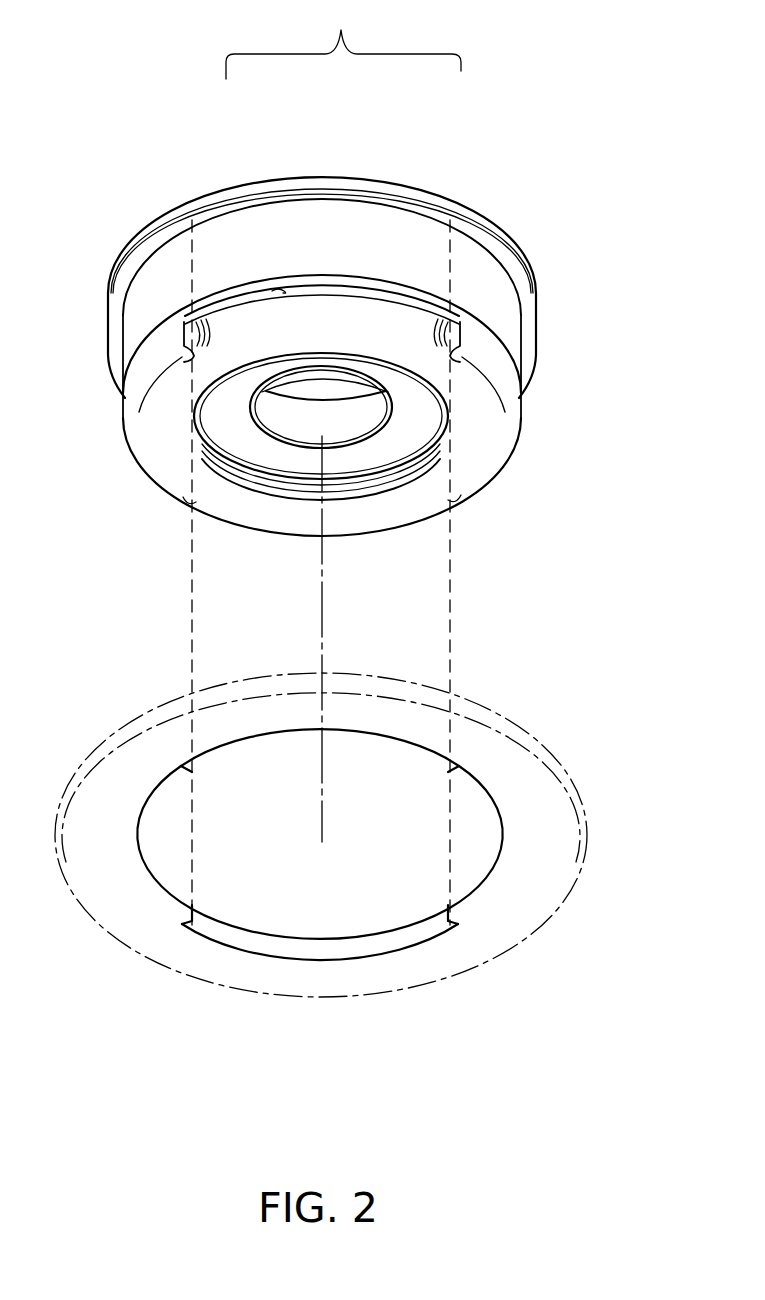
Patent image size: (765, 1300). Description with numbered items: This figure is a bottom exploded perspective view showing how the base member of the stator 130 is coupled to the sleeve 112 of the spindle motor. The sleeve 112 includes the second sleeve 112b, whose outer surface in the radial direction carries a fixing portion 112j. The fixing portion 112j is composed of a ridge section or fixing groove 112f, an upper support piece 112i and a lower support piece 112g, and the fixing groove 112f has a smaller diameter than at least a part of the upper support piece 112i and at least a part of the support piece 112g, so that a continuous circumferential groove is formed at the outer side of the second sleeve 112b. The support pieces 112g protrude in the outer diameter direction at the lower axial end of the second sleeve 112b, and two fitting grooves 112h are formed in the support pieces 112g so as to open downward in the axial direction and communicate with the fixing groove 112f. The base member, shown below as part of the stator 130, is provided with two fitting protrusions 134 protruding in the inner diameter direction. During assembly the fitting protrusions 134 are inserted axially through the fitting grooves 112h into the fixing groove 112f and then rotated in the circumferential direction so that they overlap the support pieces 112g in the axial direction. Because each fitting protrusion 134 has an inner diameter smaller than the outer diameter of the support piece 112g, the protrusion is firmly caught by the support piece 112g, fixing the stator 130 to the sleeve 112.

The sleeve 112 is at (359, 283).
The second sleeve 112b is at (477, 268).
The fixing groove 112f is at (280, 290).
The support piece 112g is at (338, 318).
The fitting groove 112h is at (165, 364).
The upper support piece 112i is at (322, 252).
The fixing portion 112j is at (343, 39).
The stator 130 is at (375, 977).
The fitting protrusion 134 is at (141, 886).